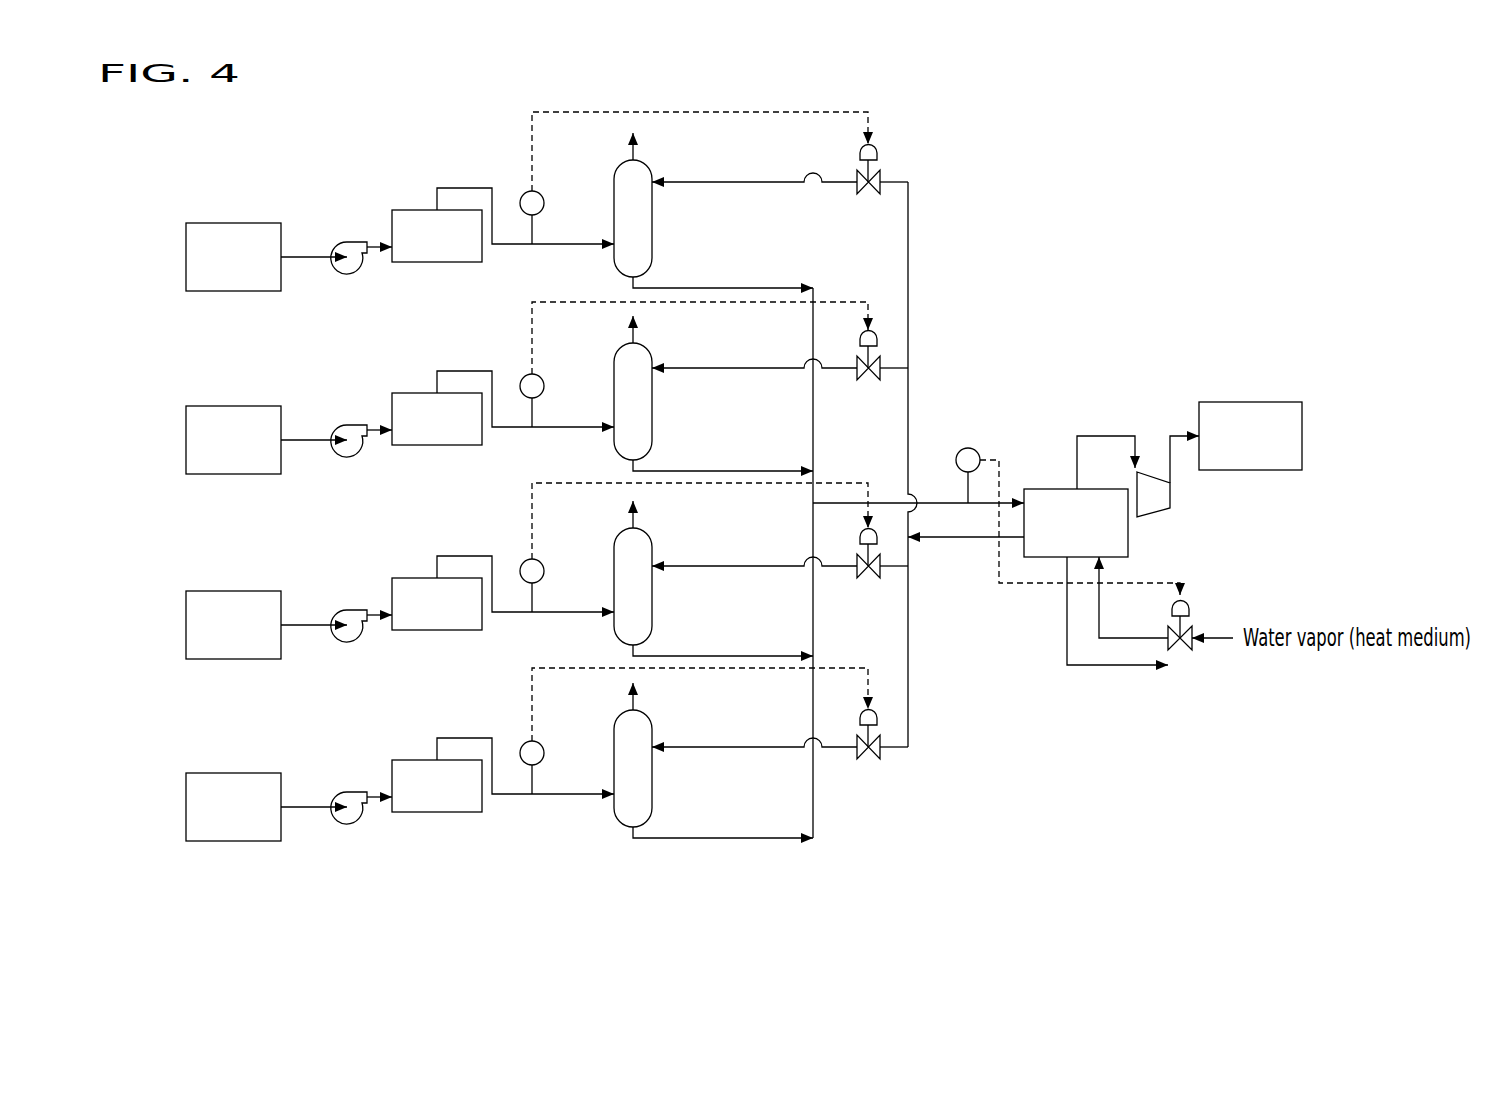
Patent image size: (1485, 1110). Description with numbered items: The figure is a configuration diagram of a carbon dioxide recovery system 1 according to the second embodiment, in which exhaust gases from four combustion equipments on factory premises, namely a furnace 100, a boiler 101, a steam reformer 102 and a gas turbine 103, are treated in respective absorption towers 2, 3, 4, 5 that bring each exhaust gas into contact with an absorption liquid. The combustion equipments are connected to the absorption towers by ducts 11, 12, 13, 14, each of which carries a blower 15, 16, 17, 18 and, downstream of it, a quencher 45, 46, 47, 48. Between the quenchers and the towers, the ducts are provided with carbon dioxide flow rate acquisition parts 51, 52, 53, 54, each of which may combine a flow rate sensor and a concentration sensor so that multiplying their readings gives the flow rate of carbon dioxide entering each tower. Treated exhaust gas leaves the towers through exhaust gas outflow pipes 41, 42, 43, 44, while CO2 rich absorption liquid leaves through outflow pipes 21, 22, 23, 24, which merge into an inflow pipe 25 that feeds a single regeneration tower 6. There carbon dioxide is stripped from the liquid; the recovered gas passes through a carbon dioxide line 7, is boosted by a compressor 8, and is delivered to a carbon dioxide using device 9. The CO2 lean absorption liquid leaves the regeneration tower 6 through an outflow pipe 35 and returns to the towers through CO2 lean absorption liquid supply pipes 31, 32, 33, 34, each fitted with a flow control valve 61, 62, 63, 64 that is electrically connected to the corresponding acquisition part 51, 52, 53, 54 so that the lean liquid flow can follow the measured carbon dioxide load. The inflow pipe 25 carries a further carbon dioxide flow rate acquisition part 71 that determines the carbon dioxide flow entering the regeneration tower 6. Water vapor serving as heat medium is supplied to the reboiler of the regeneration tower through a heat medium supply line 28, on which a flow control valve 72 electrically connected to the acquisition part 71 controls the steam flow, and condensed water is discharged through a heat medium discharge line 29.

The carbon dioxide recovery system 1 is at (588, 97).
The absorption tower 2 is at (652, 233).
The absorption tower 3 is at (658, 401).
The absorption tower 4 is at (658, 586).
The absorption tower 5 is at (658, 768).
The regeneration tower 6 is at (1053, 489).
The carbon dioxide line 7 is at (1106, 436).
The compressor 8 is at (1160, 517).
The carbon dioxide using device 9 is at (1253, 402).
The duct 11 is at (313, 260).
The duct 12 is at (314, 469).
The duct 13 is at (314, 654).
The duct 14 is at (314, 836).
The blower 15 is at (347, 278).
The blower 16 is at (361, 471).
The blower 17 is at (361, 656).
The blower 18 is at (361, 838).
The outflow pipe 21 is at (700, 288).
The outflow pipe 22 is at (723, 444).
The outflow pipe 23 is at (723, 629).
The outflow pipe 24 is at (723, 860).
The inflow pipe 25 is at (928, 502).
The heat medium supply line 28 is at (1118, 637).
The heat medium discharge line 29 is at (1065, 640).
The CO2 lean absorption liquid supply pipe 31 is at (765, 183).
The CO2 lean absorption liquid supply pipe 32 is at (754, 392).
The CO2 lean absorption liquid supply pipe 33 is at (754, 590).
The CO2 lean absorption liquid supply pipe 34 is at (754, 771).
The outflow pipe 35 is at (957, 538).
The exhaust gas outflow pipe 41 is at (628, 152).
The exhaust gas outflow pipe 42 is at (602, 328).
The exhaust gas outflow pipe 43 is at (602, 513).
The exhaust gas outflow pipe 44 is at (602, 695).
The quencher 45 is at (443, 263).
The quencher 46 is at (503, 438).
The quencher 47 is at (503, 623).
The quencher 48 is at (503, 805).
The carbon dioxide flow rate acquisition part 51 is at (543, 202).
The carbon dioxide flow rate acquisition part 52 is at (694, 364).
The carbon dioxide flow rate acquisition part 53 is at (694, 547).
The carbon dioxide flow rate acquisition part 54 is at (694, 731).
The flow control valve 61 is at (873, 192).
The flow control valve 62 is at (882, 382).
The flow control valve 63 is at (882, 580).
The flow control valve 64 is at (882, 761).
The carbon dioxide flow rate acquisition part 71 is at (972, 448).
The flow control valve 72 is at (1185, 648).
The furnace 100 is at (237, 223).
The boiler 101 is at (233, 414).
The steam reformer 102 is at (233, 599).
The gas turbine 103 is at (233, 781).